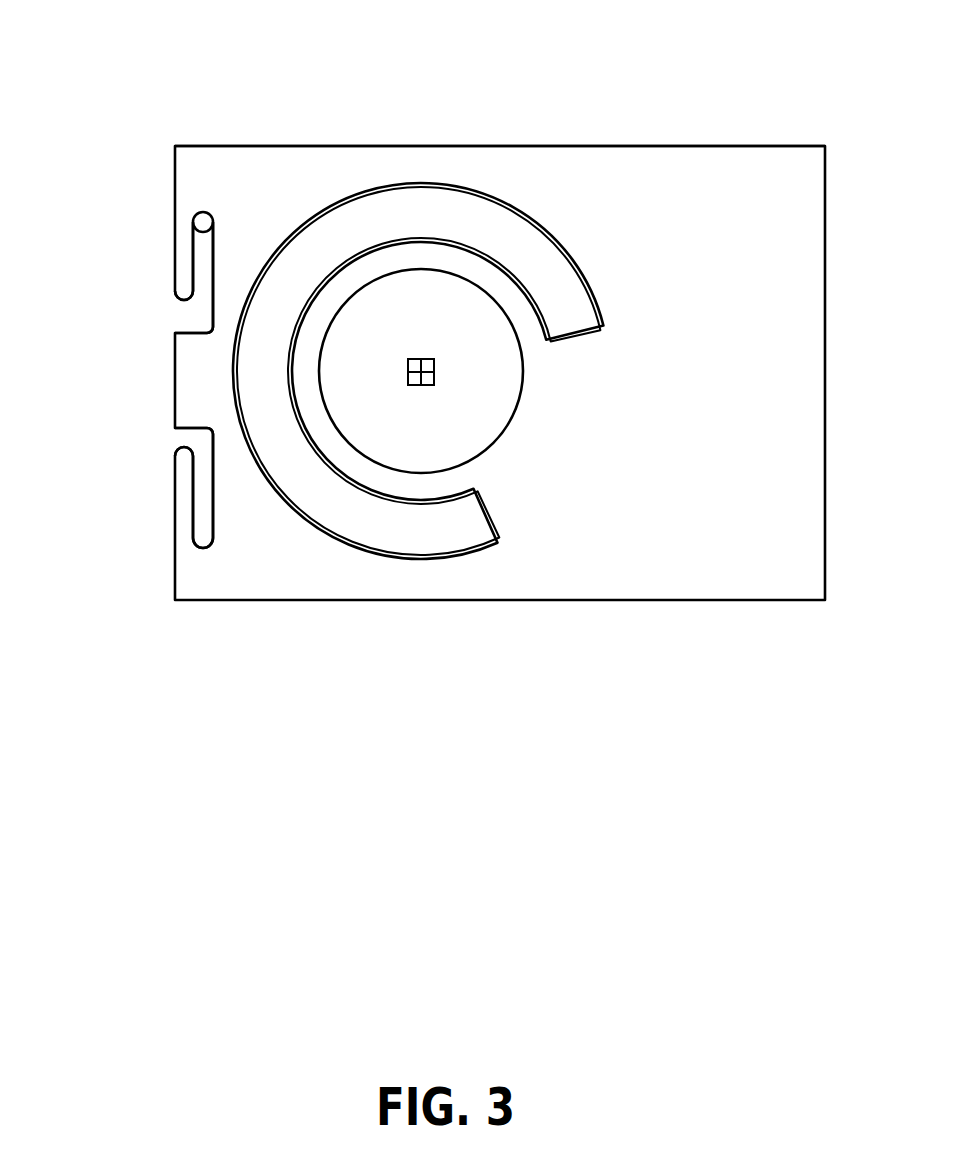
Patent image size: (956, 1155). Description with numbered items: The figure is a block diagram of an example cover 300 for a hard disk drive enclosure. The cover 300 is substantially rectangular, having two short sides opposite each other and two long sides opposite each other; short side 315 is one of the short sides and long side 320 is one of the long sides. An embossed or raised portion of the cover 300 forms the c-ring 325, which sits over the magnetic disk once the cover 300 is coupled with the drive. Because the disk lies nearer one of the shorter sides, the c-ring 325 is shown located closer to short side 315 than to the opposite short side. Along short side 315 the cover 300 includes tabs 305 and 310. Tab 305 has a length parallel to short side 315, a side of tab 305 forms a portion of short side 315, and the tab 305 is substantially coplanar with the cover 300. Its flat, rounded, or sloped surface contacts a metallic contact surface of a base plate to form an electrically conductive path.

The cover 300 is at (429, 382).
The tab 305 is at (184, 287).
The tab 310 is at (184, 482).
The short side 315 is at (174, 185).
The long side 320 is at (348, 144).
The c-ring 325 is at (497, 241).